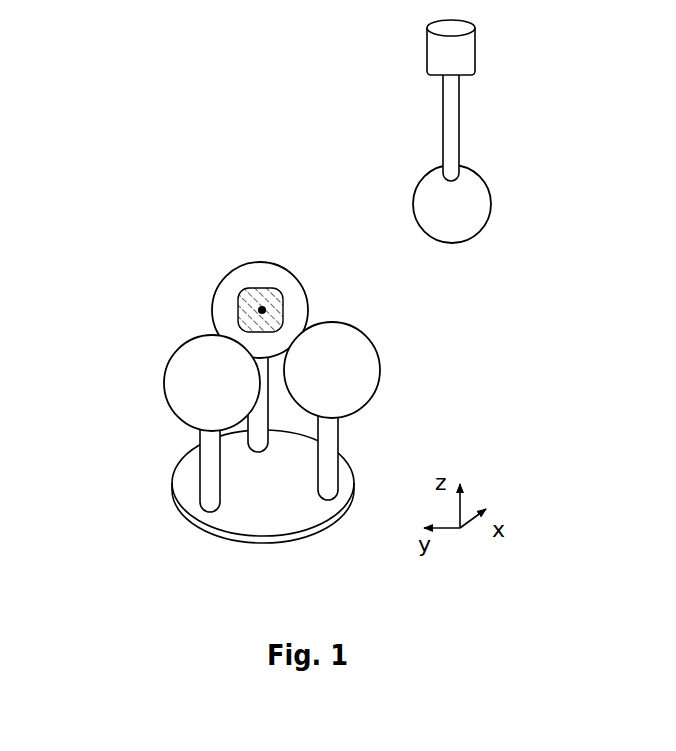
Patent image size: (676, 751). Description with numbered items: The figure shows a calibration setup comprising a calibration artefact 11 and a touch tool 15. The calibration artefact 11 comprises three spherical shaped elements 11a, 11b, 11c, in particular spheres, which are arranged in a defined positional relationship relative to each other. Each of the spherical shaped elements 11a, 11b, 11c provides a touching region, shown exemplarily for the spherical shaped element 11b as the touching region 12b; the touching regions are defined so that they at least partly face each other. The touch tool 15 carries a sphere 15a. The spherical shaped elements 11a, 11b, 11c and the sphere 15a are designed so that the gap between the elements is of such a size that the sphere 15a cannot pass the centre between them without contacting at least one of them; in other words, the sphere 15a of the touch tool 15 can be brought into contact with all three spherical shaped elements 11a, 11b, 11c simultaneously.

The calibration artefact 11 is at (103, 272).
The spherical shaped element 11a is at (180, 390).
The spherical shaped element 11b is at (283, 338).
The spherical shaped element 11c is at (358, 372).
The touching region 12b is at (273, 300).
The touch tool 15 is at (451, 134).
The sphere 15a is at (478, 217).